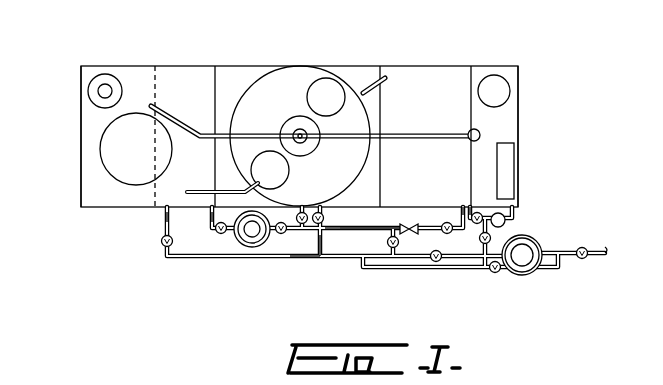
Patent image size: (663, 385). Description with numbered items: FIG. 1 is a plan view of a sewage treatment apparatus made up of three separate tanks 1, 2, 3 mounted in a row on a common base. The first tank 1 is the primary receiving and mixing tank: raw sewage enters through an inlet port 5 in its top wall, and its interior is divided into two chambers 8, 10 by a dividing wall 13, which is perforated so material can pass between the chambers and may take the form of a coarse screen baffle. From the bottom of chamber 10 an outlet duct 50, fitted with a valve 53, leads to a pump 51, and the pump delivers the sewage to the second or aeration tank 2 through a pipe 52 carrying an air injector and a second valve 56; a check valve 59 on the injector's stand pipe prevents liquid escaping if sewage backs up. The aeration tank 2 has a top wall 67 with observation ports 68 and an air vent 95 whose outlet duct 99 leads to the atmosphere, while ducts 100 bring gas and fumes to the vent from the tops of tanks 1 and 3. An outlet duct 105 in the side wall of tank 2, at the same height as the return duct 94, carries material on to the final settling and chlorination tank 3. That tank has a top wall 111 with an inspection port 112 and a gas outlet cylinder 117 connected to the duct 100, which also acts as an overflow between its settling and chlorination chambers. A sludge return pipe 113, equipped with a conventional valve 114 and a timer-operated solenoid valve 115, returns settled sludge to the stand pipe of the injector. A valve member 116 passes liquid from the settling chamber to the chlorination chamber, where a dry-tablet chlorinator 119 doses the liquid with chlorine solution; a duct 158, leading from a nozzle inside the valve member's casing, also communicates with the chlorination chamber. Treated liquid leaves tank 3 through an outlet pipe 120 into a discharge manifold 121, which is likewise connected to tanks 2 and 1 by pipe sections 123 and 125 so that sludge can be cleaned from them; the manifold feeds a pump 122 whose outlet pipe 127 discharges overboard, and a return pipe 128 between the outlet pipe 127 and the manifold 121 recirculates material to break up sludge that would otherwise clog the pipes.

The first tank 1 is at (213, 61).
The aeration tank 2 is at (351, 72).
The final settling and chlorination tank 3 is at (514, 62).
The inlet port 5 is at (110, 80).
The chamber 8 is at (90, 112).
The chamber 10 is at (222, 70).
The dividing wall 13 is at (164, 75).
The outlet duct 50 is at (189, 220).
The pump 51 is at (252, 238).
The pipe 52 is at (316, 238).
The valve 53 is at (224, 234).
The second valve 56 is at (326, 218).
The check valve 59 is at (283, 236).
The top wall 67 is at (290, 66).
The observation ports 68 is at (331, 104).
The return duct 94 is at (217, 188).
The air vent 95 is at (317, 154).
The outlet duct 99 is at (297, 122).
The ducts 100 is at (275, 137).
The outlet duct 105 is at (372, 82).
The top wall 111 is at (432, 68).
The inspection port 112 is at (502, 92).
The sludge return pipe 113 is at (367, 232).
The valve 114 is at (445, 222).
The solenoid valve 115 is at (409, 224).
The valve member 116 is at (513, 224).
The cylinder 117 is at (469, 131).
The chlorinator 119 is at (507, 155).
The outlet pipe 120 is at (492, 258).
The discharge manifold 121 is at (303, 262).
The pump 122 is at (526, 258).
The pipe section 123 is at (321, 260).
The pipe section 125 is at (164, 226).
The outlet pipe 127 is at (562, 258).
The return pipe 128 is at (380, 264).
The duct 158 is at (515, 215).